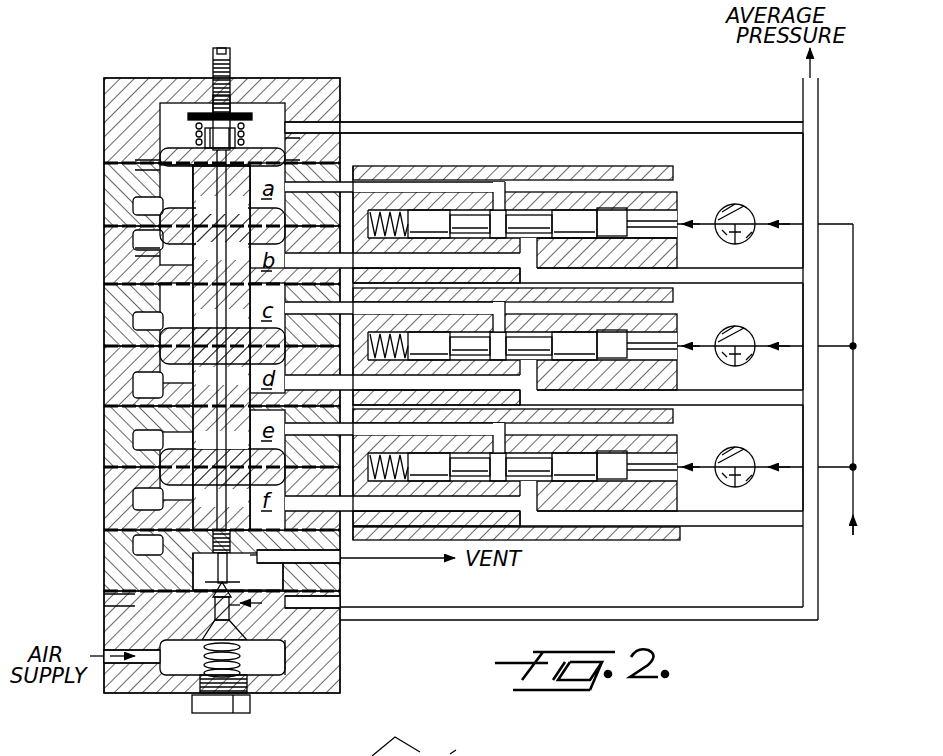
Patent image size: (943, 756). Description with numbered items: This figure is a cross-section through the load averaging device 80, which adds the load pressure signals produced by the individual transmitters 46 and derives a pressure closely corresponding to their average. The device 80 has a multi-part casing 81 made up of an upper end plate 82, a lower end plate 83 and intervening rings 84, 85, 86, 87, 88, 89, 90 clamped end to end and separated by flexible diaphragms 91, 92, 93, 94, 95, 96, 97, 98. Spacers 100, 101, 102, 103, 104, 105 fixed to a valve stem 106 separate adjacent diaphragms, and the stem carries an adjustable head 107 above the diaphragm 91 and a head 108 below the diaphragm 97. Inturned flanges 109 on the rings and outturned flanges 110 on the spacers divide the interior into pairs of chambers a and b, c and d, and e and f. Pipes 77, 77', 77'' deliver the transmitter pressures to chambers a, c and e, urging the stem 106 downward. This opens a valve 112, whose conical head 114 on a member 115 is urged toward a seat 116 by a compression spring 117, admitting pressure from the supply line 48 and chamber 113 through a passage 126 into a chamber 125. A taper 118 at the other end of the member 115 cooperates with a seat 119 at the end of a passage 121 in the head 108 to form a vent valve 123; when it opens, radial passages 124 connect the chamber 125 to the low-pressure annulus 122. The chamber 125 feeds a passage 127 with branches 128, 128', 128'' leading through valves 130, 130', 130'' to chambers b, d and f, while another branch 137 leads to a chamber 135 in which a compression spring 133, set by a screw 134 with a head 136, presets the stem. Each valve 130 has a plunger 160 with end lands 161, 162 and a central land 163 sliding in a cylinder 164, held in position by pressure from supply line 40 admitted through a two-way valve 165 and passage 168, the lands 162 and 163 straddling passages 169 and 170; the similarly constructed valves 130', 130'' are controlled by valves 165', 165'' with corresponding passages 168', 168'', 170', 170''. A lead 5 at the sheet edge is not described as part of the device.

The load averaging device 80 is at (442, 90).
The multi-part casing 81 is at (108, 76).
The upper end plate 82 is at (104, 100).
The lower end plate 83 is at (104, 640).
The ring 84 is at (104, 190).
The ring 85 is at (104, 276).
The ring 86 is at (104, 330).
The ring 87 is at (104, 390).
The ring 88 is at (104, 455).
The ring 89 is at (104, 515).
The ring 90 is at (104, 575).
The diaphragm 91 is at (160, 205).
The diaphragm 92 is at (160, 240).
The diaphragm 93 is at (150, 318).
The diaphragm 94 is at (150, 380).
The diaphragm 95 is at (160, 438).
The diaphragm 96 is at (150, 495).
The diaphragm 97 is at (135, 545).
The diaphragm 98 is at (104, 600).
The spacer 100 is at (244, 215).
The spacer 101 is at (246, 262).
The spacer 102 is at (244, 328).
The spacer 103 is at (246, 387).
The spacer 104 is at (244, 450).
The spacer 105 is at (246, 509).
The valve stem 106 is at (300, 150).
The adjustable head 107 is at (173, 157).
The head 108 is at (205, 535).
The inturned flanges 109 is at (160, 252).
The outturned flanges 110 is at (150, 165).
The supply valve 112 is at (285, 660).
The supply chamber 113 is at (262, 672).
The conical head 114 is at (222, 636).
The valve member 115 is at (230, 598).
The seat 116 is at (120, 693).
The compression spring 117 is at (238, 700).
The taper 118 is at (215, 605).
The seat 119 is at (220, 580).
The passage 121 is at (205, 567).
The annulus 122 is at (300, 560).
The vent valve 123 is at (300, 603).
The radial passages 124 is at (262, 557).
The chamber 125 is at (235, 610).
The passage 126 is at (245, 635).
The passage 127 is at (820, 112).
The branch 128 is at (762, 201).
The branch 128' is at (762, 337).
The branch 128'' is at (757, 481).
The valve 130 is at (481, 185).
The valve 130' is at (481, 341).
The valve 130'' is at (481, 461).
The compression spring 133 is at (270, 130).
The screw 134 is at (235, 48).
The chamber 135 is at (286, 120).
The head 136 is at (200, 113).
The branch 137 is at (575, 122).
The plunger 160 is at (515, 207).
The end land 161 is at (430, 210).
The end land 162 is at (575, 210).
The central land 163 is at (495, 210).
The cylinder 164 is at (612, 208).
The two-way valve 165 is at (749, 196).
The two-way valve 165' is at (752, 326).
The two-way valve 165'' is at (755, 446).
The passage 168 is at (750, 245).
The pilot line 168' is at (750, 368).
The pilot line 168'' is at (750, 488).
The passage 169 is at (548, 240).
The passage 170 is at (578, 282).
The passage 170' is at (578, 402).
The passage 170'' is at (578, 526).
The pipe 77 is at (540, 160).
The pipe 77' is at (533, 298).
The pipe 77'' is at (539, 418).
The supply line 40 is at (858, 380).
The transmitter 46 is at (455, 752).
The supply line 48 is at (135, 663).
The line 5 is at (352, 752).